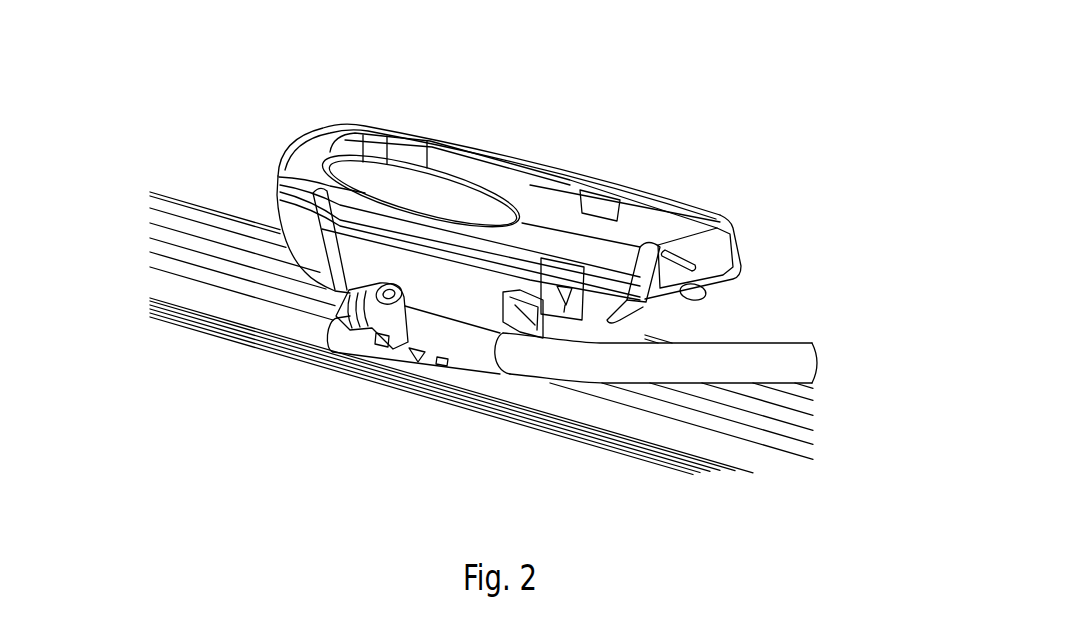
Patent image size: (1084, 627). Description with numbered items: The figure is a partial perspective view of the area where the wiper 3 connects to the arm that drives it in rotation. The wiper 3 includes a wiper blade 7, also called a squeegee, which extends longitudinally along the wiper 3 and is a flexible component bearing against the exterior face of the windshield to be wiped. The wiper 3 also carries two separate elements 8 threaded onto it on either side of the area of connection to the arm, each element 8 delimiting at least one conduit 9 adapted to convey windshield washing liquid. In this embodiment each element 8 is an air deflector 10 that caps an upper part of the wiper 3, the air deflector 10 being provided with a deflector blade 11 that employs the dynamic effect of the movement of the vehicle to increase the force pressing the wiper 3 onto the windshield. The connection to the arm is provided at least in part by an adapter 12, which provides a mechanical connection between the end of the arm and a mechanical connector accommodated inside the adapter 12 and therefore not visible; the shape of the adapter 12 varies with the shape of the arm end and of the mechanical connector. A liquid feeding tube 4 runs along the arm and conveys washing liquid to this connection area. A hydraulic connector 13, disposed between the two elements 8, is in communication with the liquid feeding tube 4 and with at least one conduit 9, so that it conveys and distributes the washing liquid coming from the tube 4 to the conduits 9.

The wiper 3 is at (780, 148).
The liquid feeding tube 4 is at (767, 350).
The wiper blade 7 is at (183, 330).
The element 8 is at (136, 252).
The conduit 9 is at (249, 325).
The air deflector 10 is at (247, 282).
The deflector blade 11 is at (188, 232).
The adapter 12 is at (550, 158).
The hydraulic connector 13 is at (454, 386).